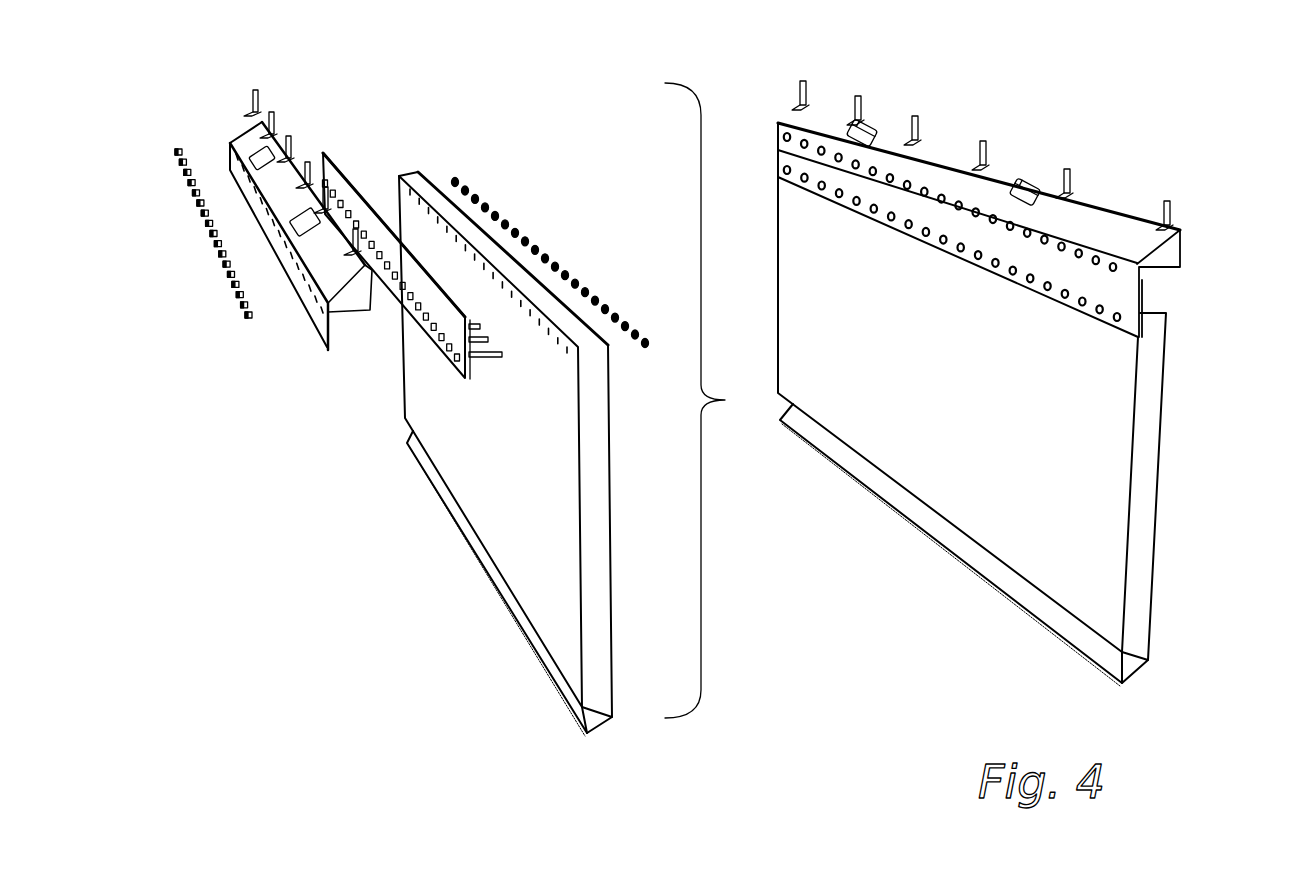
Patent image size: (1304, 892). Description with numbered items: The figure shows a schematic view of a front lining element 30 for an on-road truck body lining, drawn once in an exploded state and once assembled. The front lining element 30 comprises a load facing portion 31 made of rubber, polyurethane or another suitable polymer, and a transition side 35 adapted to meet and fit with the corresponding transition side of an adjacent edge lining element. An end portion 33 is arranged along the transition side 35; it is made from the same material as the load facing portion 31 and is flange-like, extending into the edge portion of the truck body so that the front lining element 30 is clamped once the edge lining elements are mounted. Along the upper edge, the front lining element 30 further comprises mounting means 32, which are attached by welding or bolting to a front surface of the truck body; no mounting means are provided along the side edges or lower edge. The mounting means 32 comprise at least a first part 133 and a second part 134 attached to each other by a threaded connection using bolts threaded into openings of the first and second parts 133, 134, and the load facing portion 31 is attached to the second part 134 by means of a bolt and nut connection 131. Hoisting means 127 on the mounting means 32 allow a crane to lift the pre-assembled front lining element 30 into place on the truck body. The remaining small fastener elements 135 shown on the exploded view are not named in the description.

The front lining element 30 is at (348, 700).
The load facing portion 31 is at (528, 468).
The mounting means 32 is at (937, 162).
The end portion 33 is at (587, 722).
The transition side 35 is at (570, 693).
The hoisting means 127 is at (875, 125).
The bolt and nut connection 131 is at (647, 343).
The first part 133 is at (317, 323).
The second part 134 is at (452, 322).
The fastener blocks 135 is at (243, 318).